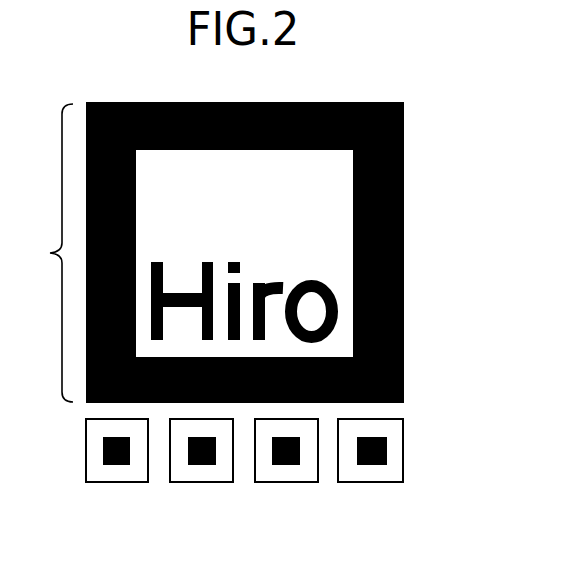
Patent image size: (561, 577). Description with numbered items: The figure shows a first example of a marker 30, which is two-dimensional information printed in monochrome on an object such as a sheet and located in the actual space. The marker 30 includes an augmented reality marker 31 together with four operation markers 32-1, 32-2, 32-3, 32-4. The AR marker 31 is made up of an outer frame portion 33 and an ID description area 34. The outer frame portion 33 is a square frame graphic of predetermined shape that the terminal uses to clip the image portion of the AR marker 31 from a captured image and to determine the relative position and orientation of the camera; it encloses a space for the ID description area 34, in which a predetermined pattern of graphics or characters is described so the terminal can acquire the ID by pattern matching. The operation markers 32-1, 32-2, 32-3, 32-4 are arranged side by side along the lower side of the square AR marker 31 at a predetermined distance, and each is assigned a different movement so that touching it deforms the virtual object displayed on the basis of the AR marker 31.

The marker 30 is at (427, 71).
The augmented reality marker 31 is at (47, 253).
The operation marker 32-1 is at (118, 482).
The operation marker 32-2 is at (204, 482).
The operation marker 32-3 is at (289, 482).
The operation marker 32-4 is at (374, 482).
The outer frame portion 33 is at (385, 140).
The ID description area 34 is at (293, 278).